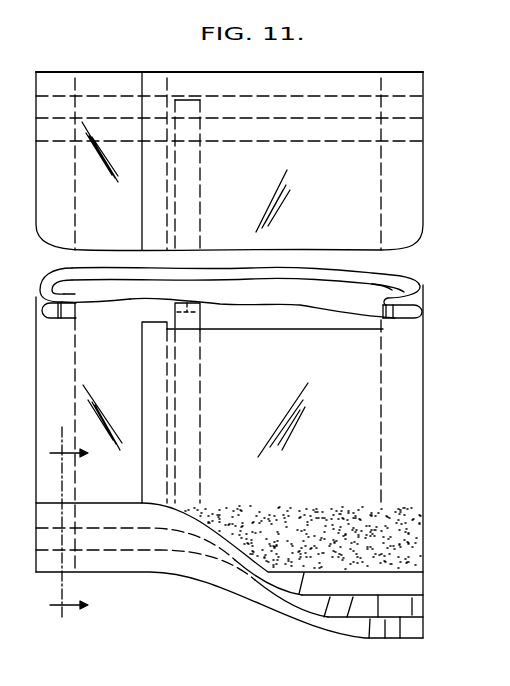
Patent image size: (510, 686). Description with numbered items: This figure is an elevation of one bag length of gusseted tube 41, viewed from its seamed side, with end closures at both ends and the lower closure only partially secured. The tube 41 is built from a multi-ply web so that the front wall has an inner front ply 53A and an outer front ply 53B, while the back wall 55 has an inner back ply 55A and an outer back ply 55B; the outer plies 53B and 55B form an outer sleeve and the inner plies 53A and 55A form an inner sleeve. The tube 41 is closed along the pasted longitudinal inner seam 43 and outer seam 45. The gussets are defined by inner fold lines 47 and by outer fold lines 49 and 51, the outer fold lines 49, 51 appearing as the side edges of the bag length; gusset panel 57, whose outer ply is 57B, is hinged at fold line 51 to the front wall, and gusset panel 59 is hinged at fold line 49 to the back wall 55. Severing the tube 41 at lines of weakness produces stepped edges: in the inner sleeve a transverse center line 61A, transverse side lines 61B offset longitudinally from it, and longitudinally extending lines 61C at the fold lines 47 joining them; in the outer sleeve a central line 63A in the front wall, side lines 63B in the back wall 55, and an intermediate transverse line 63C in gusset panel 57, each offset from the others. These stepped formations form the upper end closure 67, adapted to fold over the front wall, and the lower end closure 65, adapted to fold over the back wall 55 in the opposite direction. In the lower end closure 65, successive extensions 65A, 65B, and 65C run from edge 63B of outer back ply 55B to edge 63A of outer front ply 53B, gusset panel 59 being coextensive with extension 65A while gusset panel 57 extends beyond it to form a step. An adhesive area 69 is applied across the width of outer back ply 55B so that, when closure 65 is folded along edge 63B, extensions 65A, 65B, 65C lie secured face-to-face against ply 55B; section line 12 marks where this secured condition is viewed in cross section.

The section line 12- 12 is at (64, 530).
The gusseted tube 41 is at (36, 210).
The inner longitudinal seam 43 is at (203, 203).
The outer longitudinal seam 45 is at (142, 217).
The inner fold lines 47 is at (90, 303).
The outer fold lines 49 is at (44, 315).
The outer fold lines 51 is at (40, 292).
The inner front ply 53A is at (356, 272).
The outer front ply 53B is at (267, 268).
The back wall 55 is at (246, 407).
The inner back ply 55A is at (290, 303).
The outer back ply 55B is at (262, 331).
The gusset panel 57 is at (57, 293).
The outer ply of gusset panel 57B is at (413, 607).
The gusset panel 59 is at (64, 318).
The transverse center line 61A is at (328, 620).
The transverse side line 61B is at (352, 620).
The longitudinally extending line 61C is at (378, 609).
The central line 63A is at (370, 630).
The side line 63B is at (296, 609).
The intermediate transverse line 63C is at (402, 622).
The lower end closure 65 is at (152, 575).
The first extension 65A is at (323, 578).
The second extension 65B is at (326, 600).
The third extension 65C is at (386, 640).
The upper end closure 67 is at (131, 72).
The adhesive area 69 is at (268, 520).